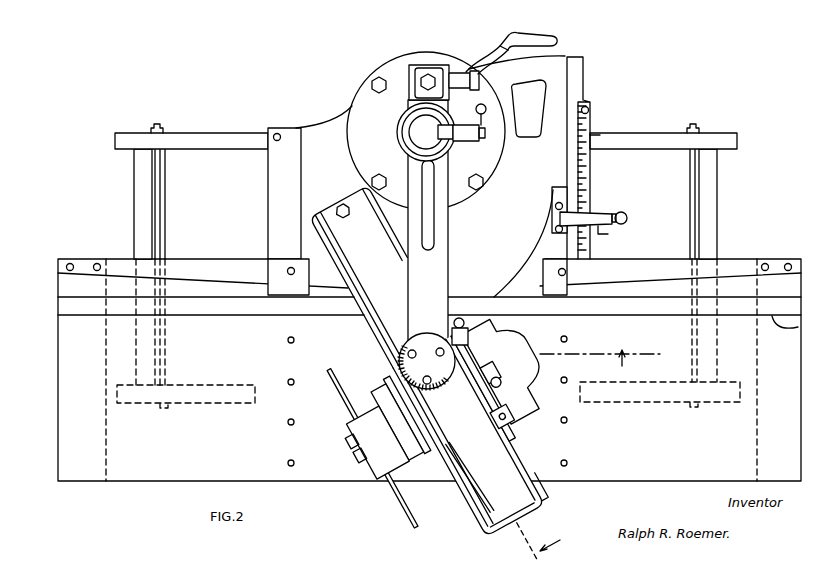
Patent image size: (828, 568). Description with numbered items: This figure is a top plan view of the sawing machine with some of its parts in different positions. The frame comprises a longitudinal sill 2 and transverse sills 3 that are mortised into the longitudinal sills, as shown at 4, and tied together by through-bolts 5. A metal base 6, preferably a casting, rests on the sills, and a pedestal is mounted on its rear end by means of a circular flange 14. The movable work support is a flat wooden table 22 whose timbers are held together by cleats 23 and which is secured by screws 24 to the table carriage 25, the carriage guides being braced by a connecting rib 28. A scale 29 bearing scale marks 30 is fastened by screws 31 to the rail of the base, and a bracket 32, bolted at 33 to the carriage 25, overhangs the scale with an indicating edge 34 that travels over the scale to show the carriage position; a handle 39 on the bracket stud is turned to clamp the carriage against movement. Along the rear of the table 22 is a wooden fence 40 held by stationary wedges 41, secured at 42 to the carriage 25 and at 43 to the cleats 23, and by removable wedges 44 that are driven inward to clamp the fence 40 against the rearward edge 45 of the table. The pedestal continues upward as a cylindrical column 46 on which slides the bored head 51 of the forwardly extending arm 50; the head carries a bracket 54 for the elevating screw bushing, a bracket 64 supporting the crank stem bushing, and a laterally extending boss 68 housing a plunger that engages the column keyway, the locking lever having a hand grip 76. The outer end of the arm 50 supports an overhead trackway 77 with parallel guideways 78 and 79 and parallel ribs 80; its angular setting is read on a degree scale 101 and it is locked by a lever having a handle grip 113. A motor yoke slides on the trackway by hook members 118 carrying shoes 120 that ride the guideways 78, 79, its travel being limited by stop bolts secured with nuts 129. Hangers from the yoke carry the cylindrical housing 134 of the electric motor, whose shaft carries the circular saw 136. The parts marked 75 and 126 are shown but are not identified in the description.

The sill 2 is at (746, 139).
The transverse sill 3 is at (134, 193).
The mortise 4 is at (709, 135).
The through-bolt 5 is at (165, 191).
The metal base 6 is at (296, 128).
The circular flange 14 is at (364, 95).
The table 22 is at (157, 462).
The cleat 23 is at (106, 470).
The screw 24 is at (288, 460).
The table carriage 25 is at (548, 246).
The connecting rib 28 is at (517, 279).
The scale 29 is at (592, 131).
The scale marks 30 is at (592, 122).
The screw 31 is at (589, 109).
The bracket 32 is at (598, 228).
The bolt 33 is at (556, 226).
The indicating edge 34 is at (603, 235).
The handle 39 is at (623, 214).
The fence 40 is at (216, 312).
The stationary wedge 41 is at (112, 260).
The securing point to carriage 42 is at (566, 272).
The securing point to cleats 43 is at (769, 265).
The removable wedge 44 is at (66, 283).
The rearward edge of the table 45 is at (798, 326).
The cylindrical column 46 is at (409, 137).
The arm 50 is at (450, 239).
The head 51 is at (400, 128).
The bracket 54 is at (440, 72).
The bracket 64 is at (470, 68).
The boss 68 is at (470, 143).
The handle 75 is at (530, 36).
The hand grip 76 is at (482, 108).
The trackway 77 is at (476, 478).
The guideway 78 is at (487, 525).
The guideway 79 is at (540, 491).
The rib 80 is at (490, 445).
The scale 101 is at (396, 358).
The handle grip 113 is at (468, 326).
The hook member 118 is at (498, 416).
The shoe 120 is at (424, 420).
The bolt 126 is at (500, 368).
The nut 129 is at (338, 208).
The motor housing 134 is at (520, 412).
The circular saw 136 is at (400, 492).